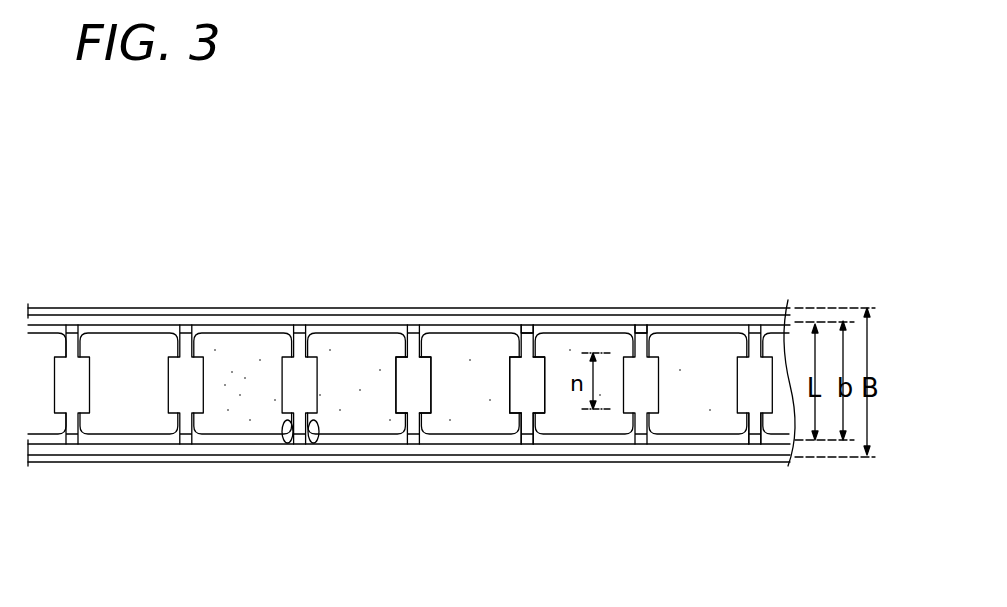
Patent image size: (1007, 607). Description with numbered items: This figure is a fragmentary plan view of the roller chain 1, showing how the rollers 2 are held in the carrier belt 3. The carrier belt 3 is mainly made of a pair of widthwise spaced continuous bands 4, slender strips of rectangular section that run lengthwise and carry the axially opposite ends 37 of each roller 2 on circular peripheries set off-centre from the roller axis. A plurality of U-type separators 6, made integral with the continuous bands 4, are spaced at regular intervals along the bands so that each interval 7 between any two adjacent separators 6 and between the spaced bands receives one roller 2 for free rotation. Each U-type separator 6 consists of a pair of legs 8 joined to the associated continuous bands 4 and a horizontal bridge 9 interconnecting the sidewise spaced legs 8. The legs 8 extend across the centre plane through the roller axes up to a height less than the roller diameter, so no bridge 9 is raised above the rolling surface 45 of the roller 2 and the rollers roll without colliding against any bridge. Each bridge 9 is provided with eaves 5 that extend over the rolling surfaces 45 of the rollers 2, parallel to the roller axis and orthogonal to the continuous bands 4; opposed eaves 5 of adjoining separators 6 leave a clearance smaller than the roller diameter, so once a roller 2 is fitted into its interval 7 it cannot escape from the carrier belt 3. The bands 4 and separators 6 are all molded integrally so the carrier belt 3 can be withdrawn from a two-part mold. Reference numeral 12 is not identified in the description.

The roller chain 1 is at (697, 287).
The roller 2 is at (456, 345).
The carrier belt 3 is at (357, 318).
The continuous band 4 is at (146, 320).
The eave 5 is at (653, 383).
The U-type separator 6 is at (527, 407).
The interval 7 is at (345, 377).
The leg 8 is at (640, 328).
The horizontal bridge 9 is at (527, 375).
The sealing bead 12 is at (316, 444).
The axially opposite end 37 is at (357, 447).
The rolling surface 45 is at (235, 360).